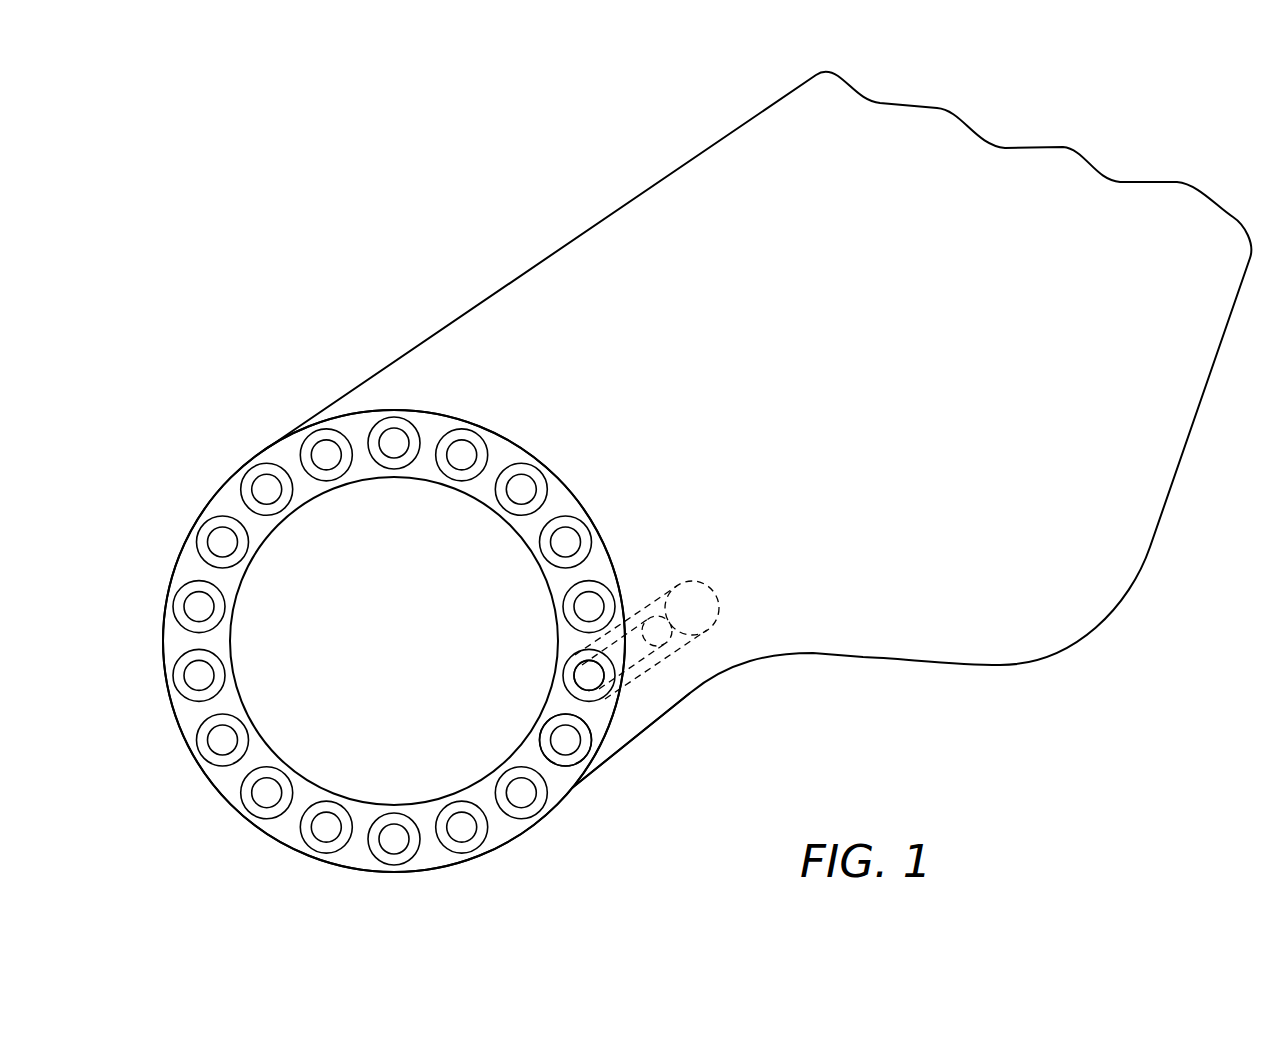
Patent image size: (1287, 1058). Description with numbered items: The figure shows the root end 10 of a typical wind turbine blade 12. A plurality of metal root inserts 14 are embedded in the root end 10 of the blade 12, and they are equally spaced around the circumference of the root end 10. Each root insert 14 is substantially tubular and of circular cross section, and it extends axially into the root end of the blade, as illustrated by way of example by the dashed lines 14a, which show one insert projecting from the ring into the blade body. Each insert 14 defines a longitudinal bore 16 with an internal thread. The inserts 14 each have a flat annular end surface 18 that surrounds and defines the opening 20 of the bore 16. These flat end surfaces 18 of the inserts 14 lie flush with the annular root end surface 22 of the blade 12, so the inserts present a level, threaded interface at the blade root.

The root end 10 is at (197, 483).
The wind turbine blade 12 is at (571, 243).
The root insert 14 is at (558, 806).
The dashed lines 14a is at (684, 645).
The longitudinal bore 16 is at (573, 542).
The flat annular end surface 18 is at (588, 760).
The opening 20 is at (588, 678).
The annular root end surface 22 is at (508, 834).